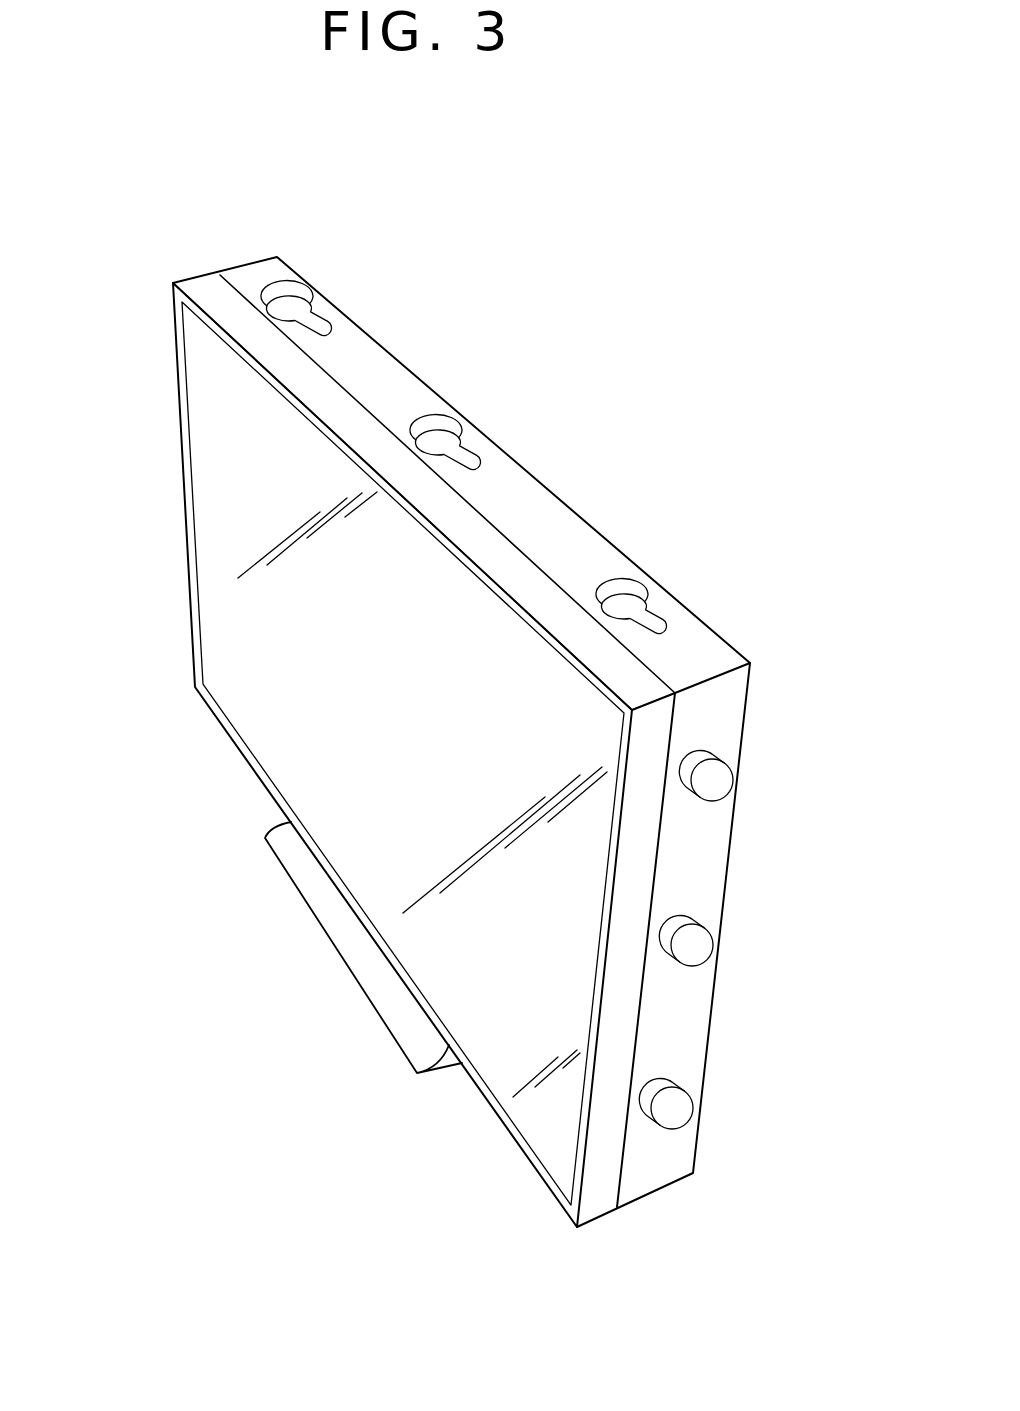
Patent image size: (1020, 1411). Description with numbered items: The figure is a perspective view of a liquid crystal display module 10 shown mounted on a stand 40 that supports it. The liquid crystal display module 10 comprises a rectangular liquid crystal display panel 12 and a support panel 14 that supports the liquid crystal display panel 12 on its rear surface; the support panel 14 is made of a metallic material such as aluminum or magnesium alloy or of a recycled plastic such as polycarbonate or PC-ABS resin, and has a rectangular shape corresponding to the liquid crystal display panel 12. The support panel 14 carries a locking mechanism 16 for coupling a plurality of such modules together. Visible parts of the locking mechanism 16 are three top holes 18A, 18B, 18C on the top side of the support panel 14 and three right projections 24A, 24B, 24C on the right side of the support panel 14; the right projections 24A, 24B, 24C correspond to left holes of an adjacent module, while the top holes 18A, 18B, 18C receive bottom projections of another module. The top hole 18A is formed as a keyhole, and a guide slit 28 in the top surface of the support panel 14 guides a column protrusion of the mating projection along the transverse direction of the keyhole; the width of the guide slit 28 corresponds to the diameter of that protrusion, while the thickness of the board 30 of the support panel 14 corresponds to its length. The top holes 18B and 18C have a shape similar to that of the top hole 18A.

The liquid crystal display module 10 is at (163, 518).
The liquid crystal display panel 12 is at (598, 1217).
The support panel 14 is at (748, 718).
The locking mechanism 16 is at (790, 877).
The top hole 18A is at (293, 290).
The top hole 18B is at (462, 423).
The top hole 18C is at (637, 582).
The right projection 24A is at (673, 1112).
The right projection 24B is at (700, 944).
The right projection 24C is at (723, 783).
The guide slit 28 is at (305, 317).
The board 30 is at (378, 374).
The stand 40 is at (442, 1060).